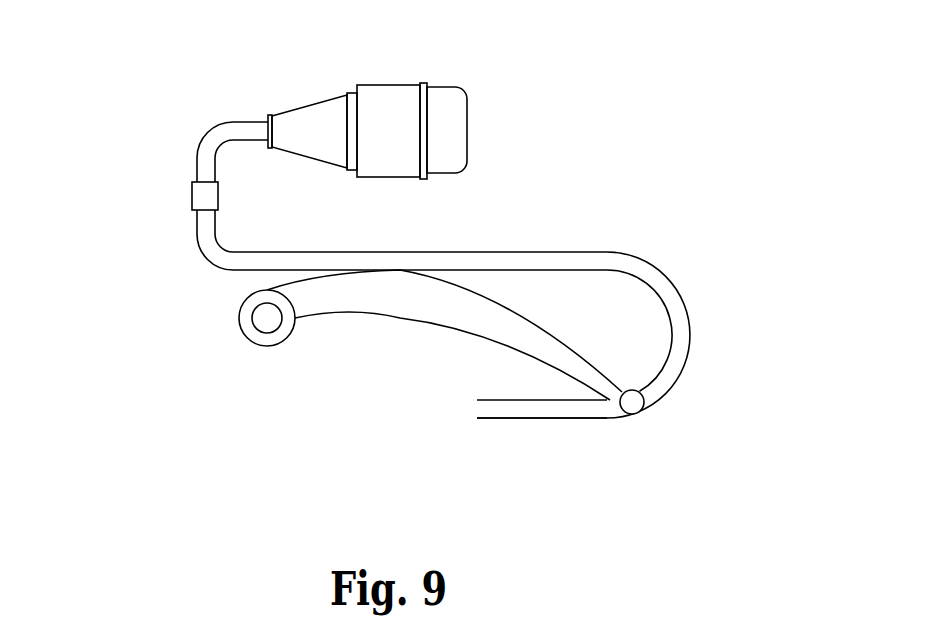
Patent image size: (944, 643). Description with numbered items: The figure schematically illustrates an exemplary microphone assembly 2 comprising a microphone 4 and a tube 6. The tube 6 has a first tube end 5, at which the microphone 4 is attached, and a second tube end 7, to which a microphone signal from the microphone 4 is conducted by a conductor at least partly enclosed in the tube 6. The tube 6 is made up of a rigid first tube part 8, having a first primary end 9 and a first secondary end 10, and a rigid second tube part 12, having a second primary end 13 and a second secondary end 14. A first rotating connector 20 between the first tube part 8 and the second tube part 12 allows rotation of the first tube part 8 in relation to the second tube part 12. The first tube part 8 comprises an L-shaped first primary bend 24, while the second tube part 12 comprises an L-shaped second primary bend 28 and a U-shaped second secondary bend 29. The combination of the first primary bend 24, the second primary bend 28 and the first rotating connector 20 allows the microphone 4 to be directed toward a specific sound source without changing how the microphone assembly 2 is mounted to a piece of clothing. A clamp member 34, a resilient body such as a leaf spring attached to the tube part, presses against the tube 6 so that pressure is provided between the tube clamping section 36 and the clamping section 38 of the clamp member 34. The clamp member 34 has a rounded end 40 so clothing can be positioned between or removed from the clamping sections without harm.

The microphone assembly 2 is at (720, 78).
The microphone 4 is at (386, 115).
The first tube end 5 is at (247, 99).
The first primary end 9 is at (267, 117).
The tube 6 is at (396, 233).
The second tube end 7 is at (542, 450).
The second secondary end 14 is at (477, 418).
The first tube part 8 is at (195, 165).
The first secondary end 10 is at (139, 189).
The second primary end 13 is at (139, 189).
The first rotating connector 20 is at (192, 192).
The second tube part 12 is at (512, 252).
The first primary bend 24 is at (207, 133).
The second primary bend 28 is at (207, 255).
The second secondary bend 29 is at (688, 358).
The clamp member 34 is at (393, 317).
The tube clamping section 36 is at (390, 258).
The clamping section 38 is at (360, 281).
The rounded end 40 is at (238, 320).